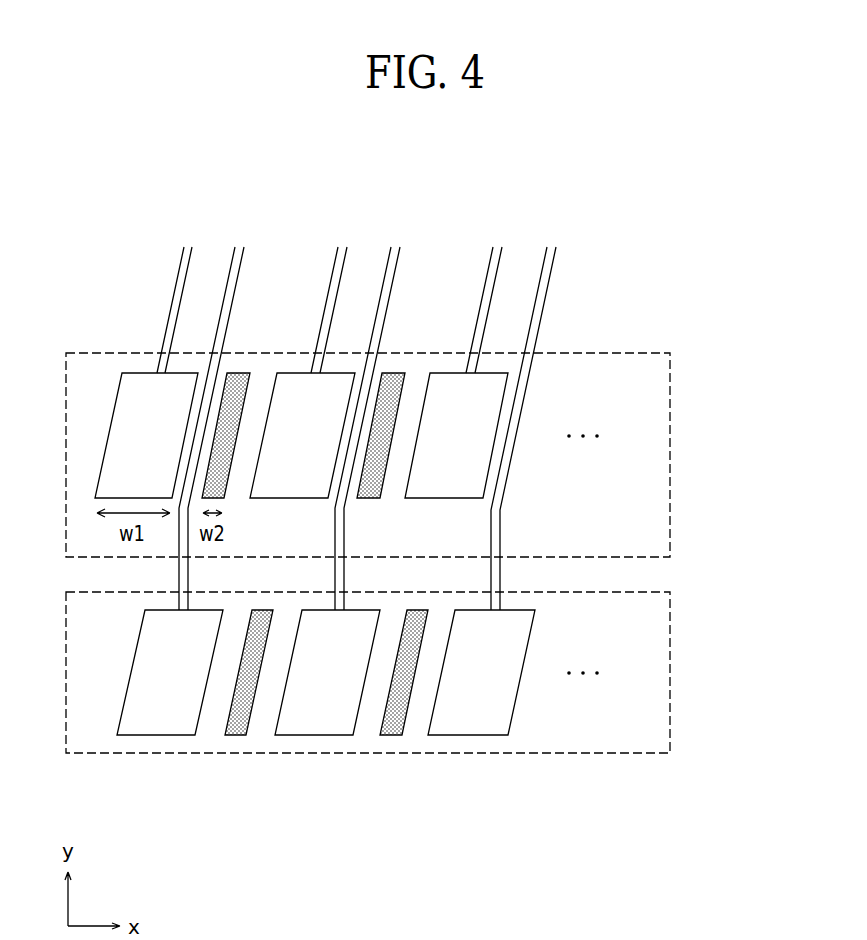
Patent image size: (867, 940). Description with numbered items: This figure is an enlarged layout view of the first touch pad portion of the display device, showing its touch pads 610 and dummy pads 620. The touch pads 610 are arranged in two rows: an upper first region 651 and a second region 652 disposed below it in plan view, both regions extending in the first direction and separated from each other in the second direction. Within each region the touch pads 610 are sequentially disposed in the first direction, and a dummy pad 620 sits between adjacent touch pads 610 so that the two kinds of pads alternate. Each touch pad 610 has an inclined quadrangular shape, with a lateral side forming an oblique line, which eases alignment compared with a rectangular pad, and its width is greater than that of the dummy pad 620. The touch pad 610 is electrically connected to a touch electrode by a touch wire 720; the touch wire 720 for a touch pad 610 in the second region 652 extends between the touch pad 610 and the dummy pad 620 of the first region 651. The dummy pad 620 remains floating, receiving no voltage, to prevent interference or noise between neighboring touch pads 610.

The touch wire 720 is at (168, 321).
The first region 651 is at (670, 463).
The second region 652 is at (670, 653).
The touch pad 610 is at (162, 736).
The dummy pad 620 is at (232, 738).